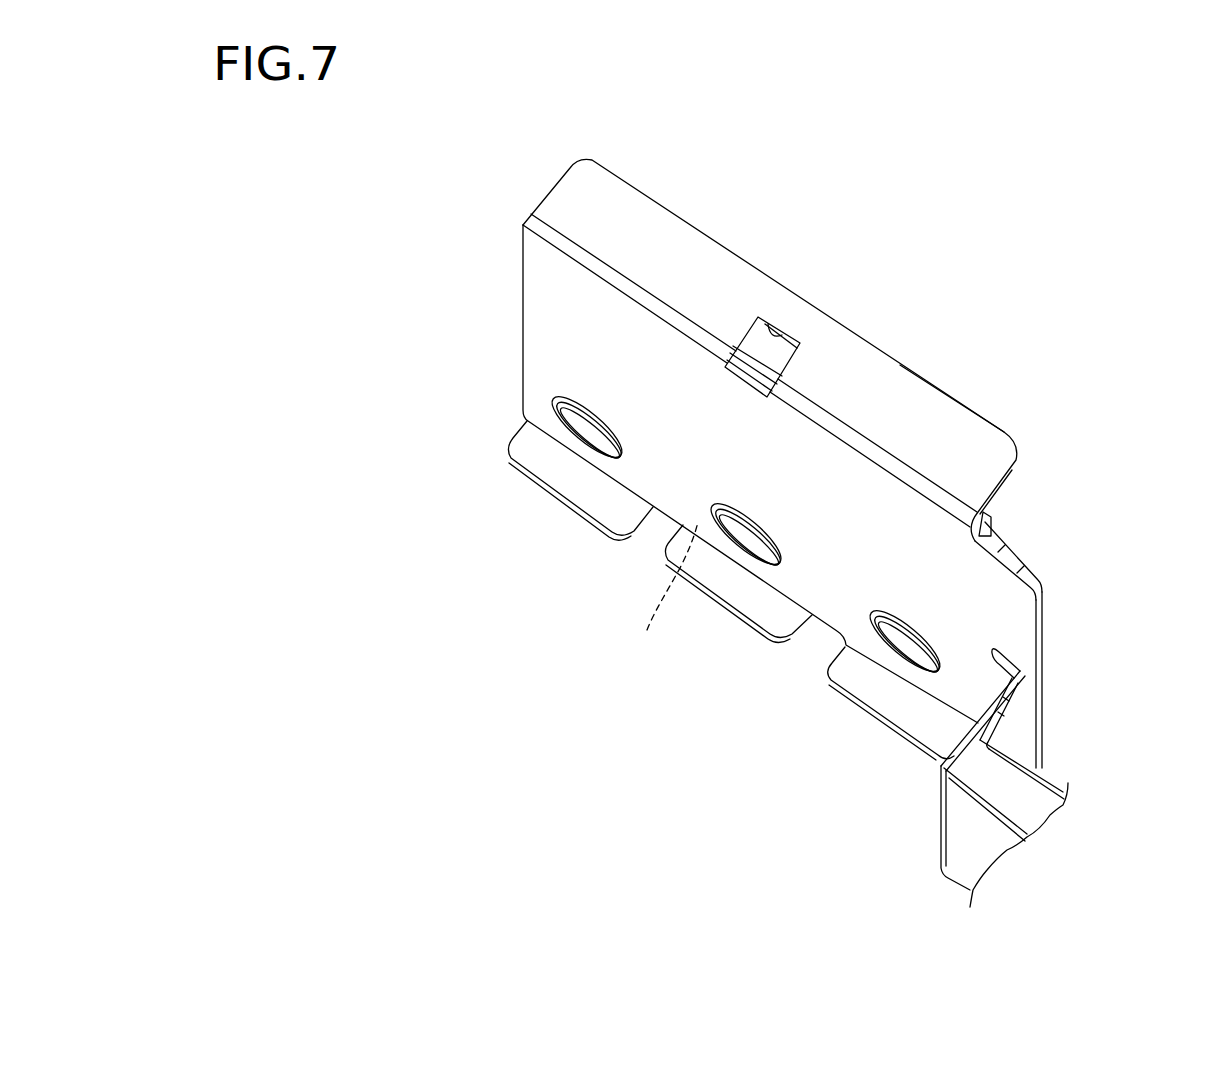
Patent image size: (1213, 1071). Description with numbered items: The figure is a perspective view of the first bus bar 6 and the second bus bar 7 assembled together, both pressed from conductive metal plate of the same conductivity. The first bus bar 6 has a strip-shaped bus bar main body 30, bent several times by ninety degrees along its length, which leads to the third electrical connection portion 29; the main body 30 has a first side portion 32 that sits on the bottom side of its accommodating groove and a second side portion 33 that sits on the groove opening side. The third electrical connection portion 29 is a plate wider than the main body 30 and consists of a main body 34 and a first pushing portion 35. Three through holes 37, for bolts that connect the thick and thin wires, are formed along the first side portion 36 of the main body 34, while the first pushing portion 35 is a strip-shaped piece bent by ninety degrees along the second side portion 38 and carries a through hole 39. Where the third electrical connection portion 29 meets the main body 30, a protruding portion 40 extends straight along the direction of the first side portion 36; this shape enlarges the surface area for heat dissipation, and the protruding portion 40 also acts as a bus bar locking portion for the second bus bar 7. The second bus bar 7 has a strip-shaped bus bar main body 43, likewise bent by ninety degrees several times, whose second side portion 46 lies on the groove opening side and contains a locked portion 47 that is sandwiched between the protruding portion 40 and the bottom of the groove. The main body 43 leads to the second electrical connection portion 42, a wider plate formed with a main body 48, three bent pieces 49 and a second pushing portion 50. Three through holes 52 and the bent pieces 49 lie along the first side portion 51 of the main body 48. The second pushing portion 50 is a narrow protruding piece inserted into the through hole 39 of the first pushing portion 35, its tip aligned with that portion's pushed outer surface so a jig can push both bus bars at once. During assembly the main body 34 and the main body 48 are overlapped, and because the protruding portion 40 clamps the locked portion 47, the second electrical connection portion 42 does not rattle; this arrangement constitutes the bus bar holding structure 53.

The first bus bar 6 is at (995, 808).
The second bus bar 7 is at (996, 808).
The third electrical connection portion 29 is at (562, 197).
The bus bar main body 30 is at (960, 830).
The first side portion 32 is at (962, 885).
The second side portion 33 is at (1020, 808).
The main body 34 is at (545, 327).
The first pushing portion 35 is at (925, 397).
The first side portion 36 is at (670, 522).
The through hole 37 is at (684, 534).
The second side portion 38 is at (570, 248).
The through hole 39 is at (802, 309).
The protruding portion 40 is at (1028, 653).
The second electrical connection portion 42 is at (990, 518).
The bus bar main body 43 is at (1003, 792).
The second side portion 46 is at (1010, 748).
The locked portion 47 is at (1000, 678).
The main body 48 is at (995, 547).
The bent piece 49 is at (596, 494).
The second pushing portion 50 is at (796, 340).
The first side portion 51 is at (664, 597).
The through hole 52 is at (580, 436).
The bus bar holding structure 53 is at (1076, 624).